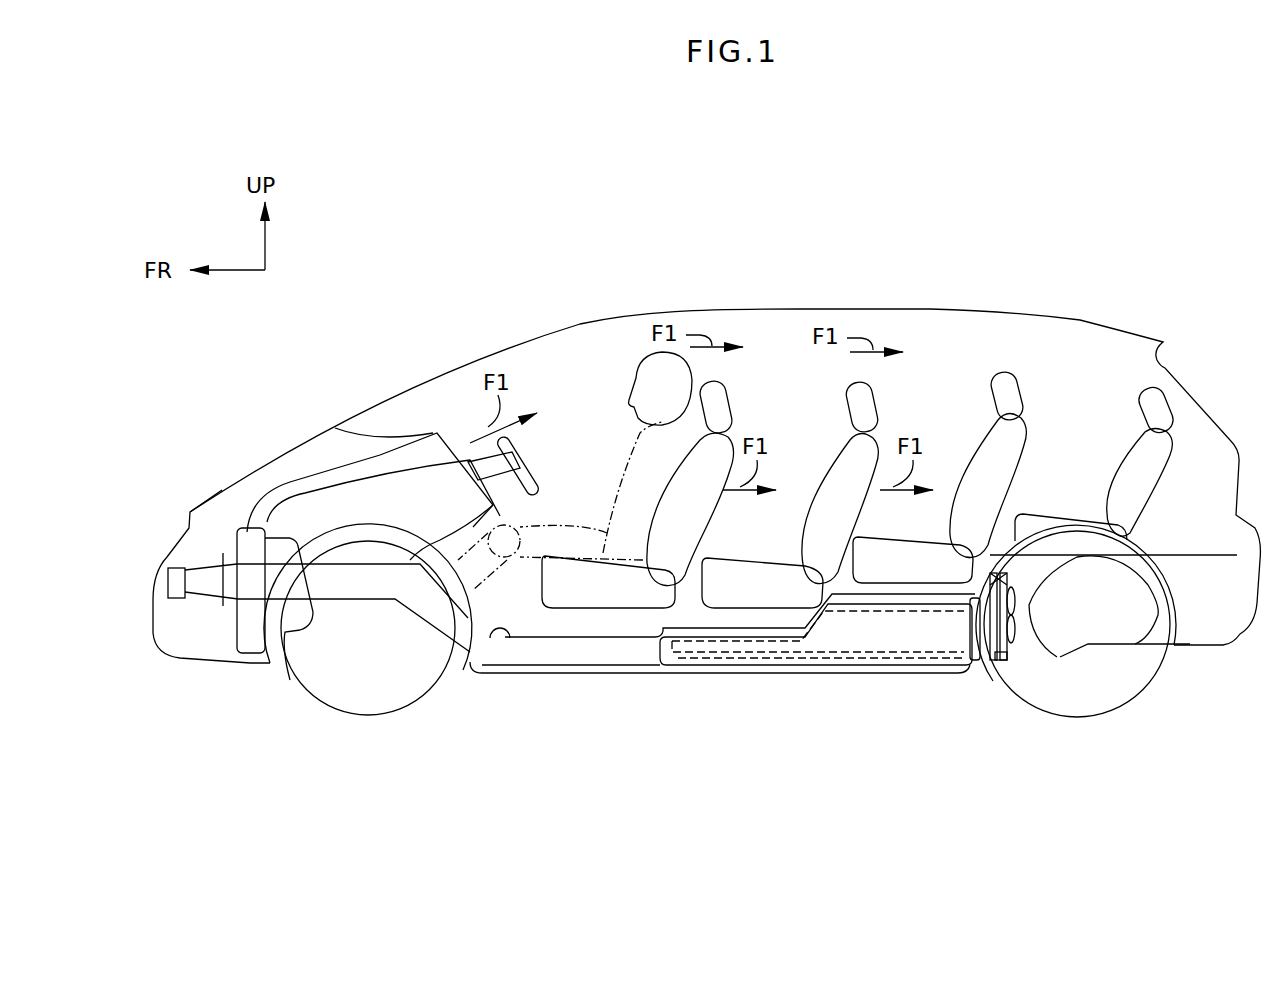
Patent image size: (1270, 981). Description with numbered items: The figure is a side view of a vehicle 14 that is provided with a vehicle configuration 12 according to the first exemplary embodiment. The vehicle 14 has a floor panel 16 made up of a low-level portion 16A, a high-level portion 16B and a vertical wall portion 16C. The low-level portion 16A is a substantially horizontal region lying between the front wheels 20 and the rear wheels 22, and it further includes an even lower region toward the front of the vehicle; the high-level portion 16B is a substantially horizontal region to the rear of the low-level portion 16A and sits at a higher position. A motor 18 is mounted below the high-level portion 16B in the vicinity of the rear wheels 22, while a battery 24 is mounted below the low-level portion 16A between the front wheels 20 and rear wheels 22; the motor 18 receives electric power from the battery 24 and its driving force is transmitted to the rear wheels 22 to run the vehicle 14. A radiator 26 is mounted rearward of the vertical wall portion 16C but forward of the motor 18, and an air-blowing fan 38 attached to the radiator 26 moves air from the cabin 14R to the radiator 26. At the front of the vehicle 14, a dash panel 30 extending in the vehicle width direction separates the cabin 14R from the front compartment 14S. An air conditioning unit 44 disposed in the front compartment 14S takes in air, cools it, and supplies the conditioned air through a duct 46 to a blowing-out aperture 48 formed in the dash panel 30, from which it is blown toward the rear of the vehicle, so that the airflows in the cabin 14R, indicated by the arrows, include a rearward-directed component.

The vehicle configuration 12 is at (948, 718).
The vehicle 14 is at (1020, 240).
The cabin 14R is at (778, 352).
The front compartment 14S is at (307, 467).
The floor panel 16 is at (492, 648).
The low-level portion 16A is at (862, 583).
The high-level portion 16B is at (1174, 555).
The vertical wall portion 16C is at (980, 562).
The motor 18 is at (1062, 662).
The front wheels 20 is at (358, 716).
The rear wheels 22 is at (1122, 707).
The battery 24 is at (798, 668).
The radiator 26 is at (1003, 662).
The dash panel 30 is at (490, 516).
The air-blowing fan 38 is at (1018, 648).
The air conditioning unit 44 is at (232, 642).
The duct 46 is at (420, 495).
The blowing-out aperture 48 is at (455, 445).